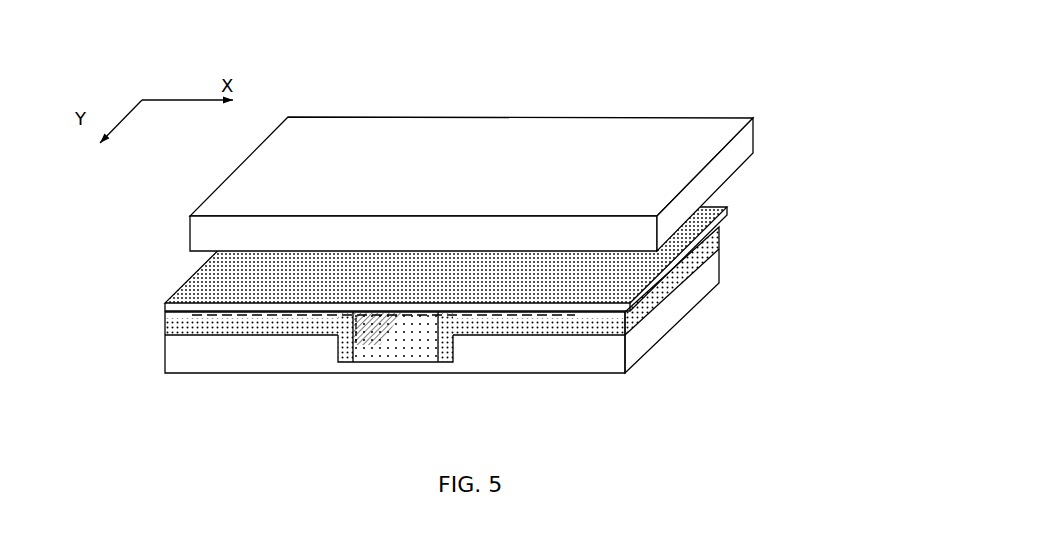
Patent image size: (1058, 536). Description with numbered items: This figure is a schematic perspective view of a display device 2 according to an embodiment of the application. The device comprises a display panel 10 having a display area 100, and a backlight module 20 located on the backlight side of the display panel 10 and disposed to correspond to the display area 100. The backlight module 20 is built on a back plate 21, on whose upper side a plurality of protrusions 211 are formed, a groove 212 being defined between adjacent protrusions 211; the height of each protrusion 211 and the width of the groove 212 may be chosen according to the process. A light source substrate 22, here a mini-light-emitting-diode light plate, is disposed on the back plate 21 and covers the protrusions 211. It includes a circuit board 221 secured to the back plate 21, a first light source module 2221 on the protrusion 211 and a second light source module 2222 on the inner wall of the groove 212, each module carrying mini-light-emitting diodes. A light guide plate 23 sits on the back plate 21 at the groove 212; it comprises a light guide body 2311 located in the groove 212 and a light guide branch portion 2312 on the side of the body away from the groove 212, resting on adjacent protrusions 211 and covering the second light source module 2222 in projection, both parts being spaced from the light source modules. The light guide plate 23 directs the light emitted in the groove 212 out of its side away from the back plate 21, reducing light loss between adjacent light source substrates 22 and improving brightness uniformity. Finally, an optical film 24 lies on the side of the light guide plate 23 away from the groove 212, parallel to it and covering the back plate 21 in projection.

The display module 2 is at (188, 43).
The display area 100 is at (749, 160).
The display panel 10 is at (471, 184).
The backlight module 20 is at (155, 340).
The back plate 21 is at (632, 342).
The protrusion 211 is at (257, 337).
The groove 212 is at (437, 365).
The light source substrate 22 is at (380, 272).
The circuit board 221 is at (660, 291).
The first light source module 2221 is at (181, 320).
The second light source module 2222 is at (368, 348).
The light guide plate 23 is at (400, 365).
The light guide body 2311 is at (430, 343).
The light guide branch portion 2312 is at (459, 317).
The optical film 24 is at (163, 304).